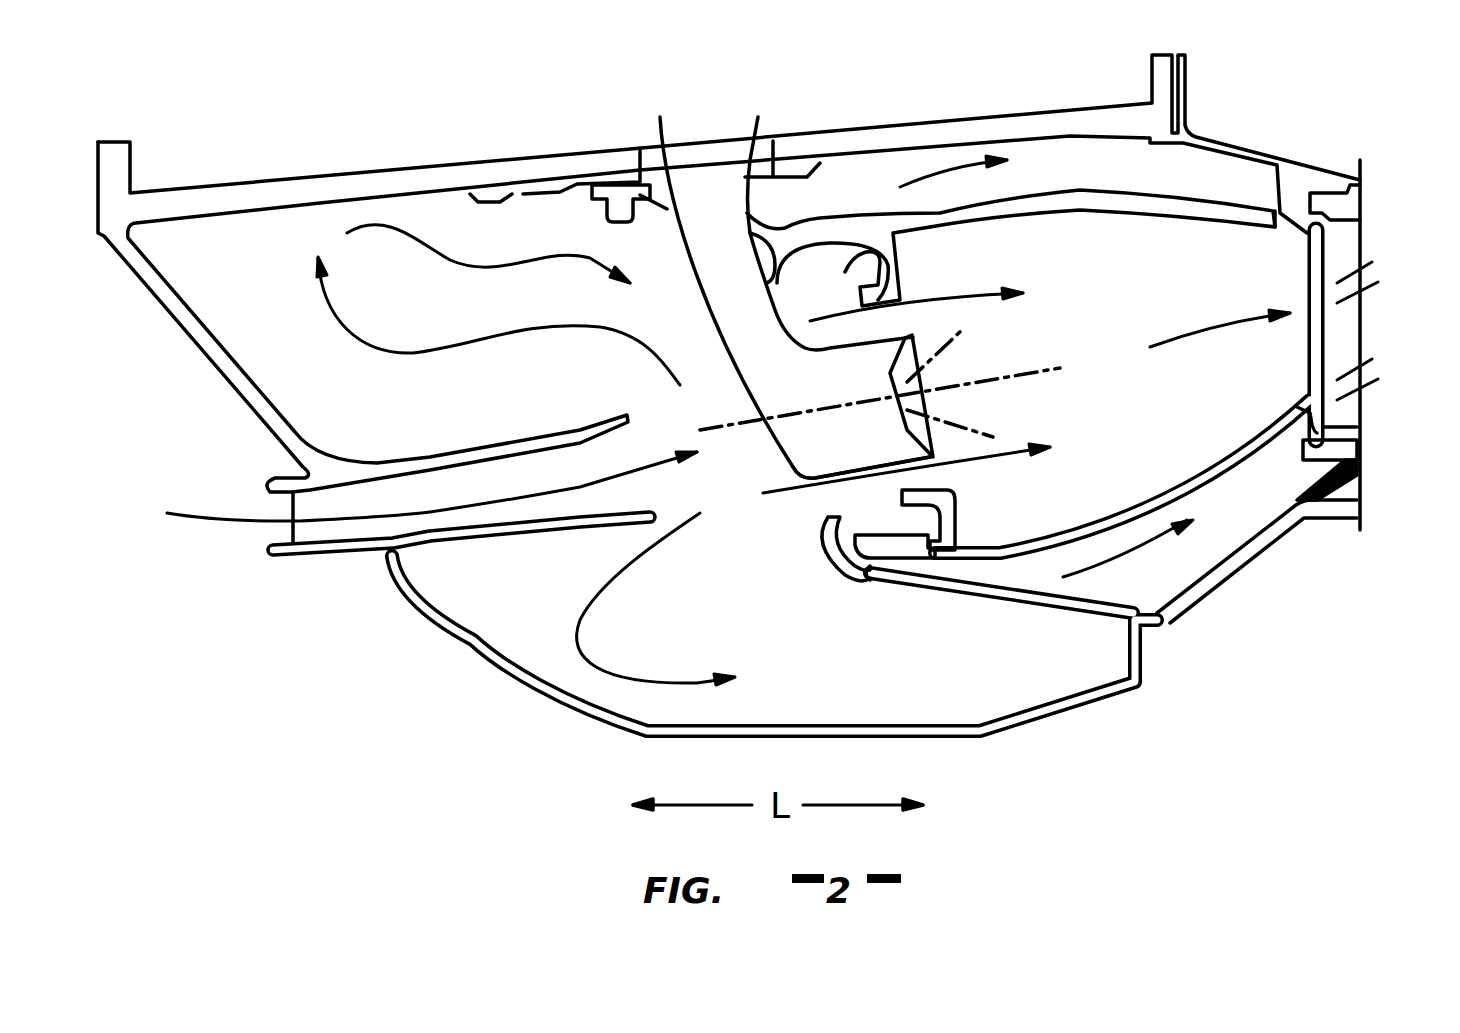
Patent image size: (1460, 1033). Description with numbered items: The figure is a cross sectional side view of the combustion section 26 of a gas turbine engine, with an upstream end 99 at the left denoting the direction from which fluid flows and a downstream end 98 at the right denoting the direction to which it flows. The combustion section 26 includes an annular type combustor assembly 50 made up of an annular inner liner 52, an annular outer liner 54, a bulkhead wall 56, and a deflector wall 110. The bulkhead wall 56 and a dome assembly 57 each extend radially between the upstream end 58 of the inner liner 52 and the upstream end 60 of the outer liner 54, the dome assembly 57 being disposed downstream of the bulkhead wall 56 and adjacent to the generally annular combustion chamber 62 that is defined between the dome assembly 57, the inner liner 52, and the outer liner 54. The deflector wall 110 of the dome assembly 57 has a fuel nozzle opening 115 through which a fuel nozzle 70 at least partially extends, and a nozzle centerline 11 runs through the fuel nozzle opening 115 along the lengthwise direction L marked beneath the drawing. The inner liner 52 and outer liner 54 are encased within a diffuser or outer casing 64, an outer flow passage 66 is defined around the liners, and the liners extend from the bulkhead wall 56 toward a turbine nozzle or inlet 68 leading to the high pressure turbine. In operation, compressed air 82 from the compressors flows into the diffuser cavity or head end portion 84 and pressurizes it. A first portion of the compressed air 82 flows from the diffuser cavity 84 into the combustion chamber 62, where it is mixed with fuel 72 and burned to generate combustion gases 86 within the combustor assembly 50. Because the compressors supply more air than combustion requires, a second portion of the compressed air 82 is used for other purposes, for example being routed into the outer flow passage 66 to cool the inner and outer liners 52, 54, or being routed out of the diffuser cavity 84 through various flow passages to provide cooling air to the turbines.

The combustion section 26 is at (900, 55).
The outer casing 64 is at (1115, 65).
The upstream end of the outer liner 60 is at (855, 197).
The combustor assembly 50 is at (1042, 177).
The outer flow passage 66 is at (1205, 162).
The turbine nozzle or inlet 68 is at (1333, 270).
The diffuser cavity 84 is at (502, 230).
The dome assembly 57 is at (907, 260).
The outer liner 54 is at (1108, 200).
The deflector wall 110 is at (868, 254).
The fuel nozzle opening 115 is at (912, 322).
The nozzle centerline 11 is at (1060, 368).
The combustion gases 86 is at (1212, 330).
The downstream end 98 is at (1440, 336).
The fuel nozzle 70 is at (835, 398).
The fuel 72 is at (975, 388).
The combustion chamber 62 is at (1140, 409).
The inner liner 52 is at (1221, 457).
The upstream end 99 is at (133, 454).
The compressed air 82 is at (225, 525).
The bulkhead wall 56 is at (825, 570).
The upstream end of the inner liner 58 is at (890, 580).